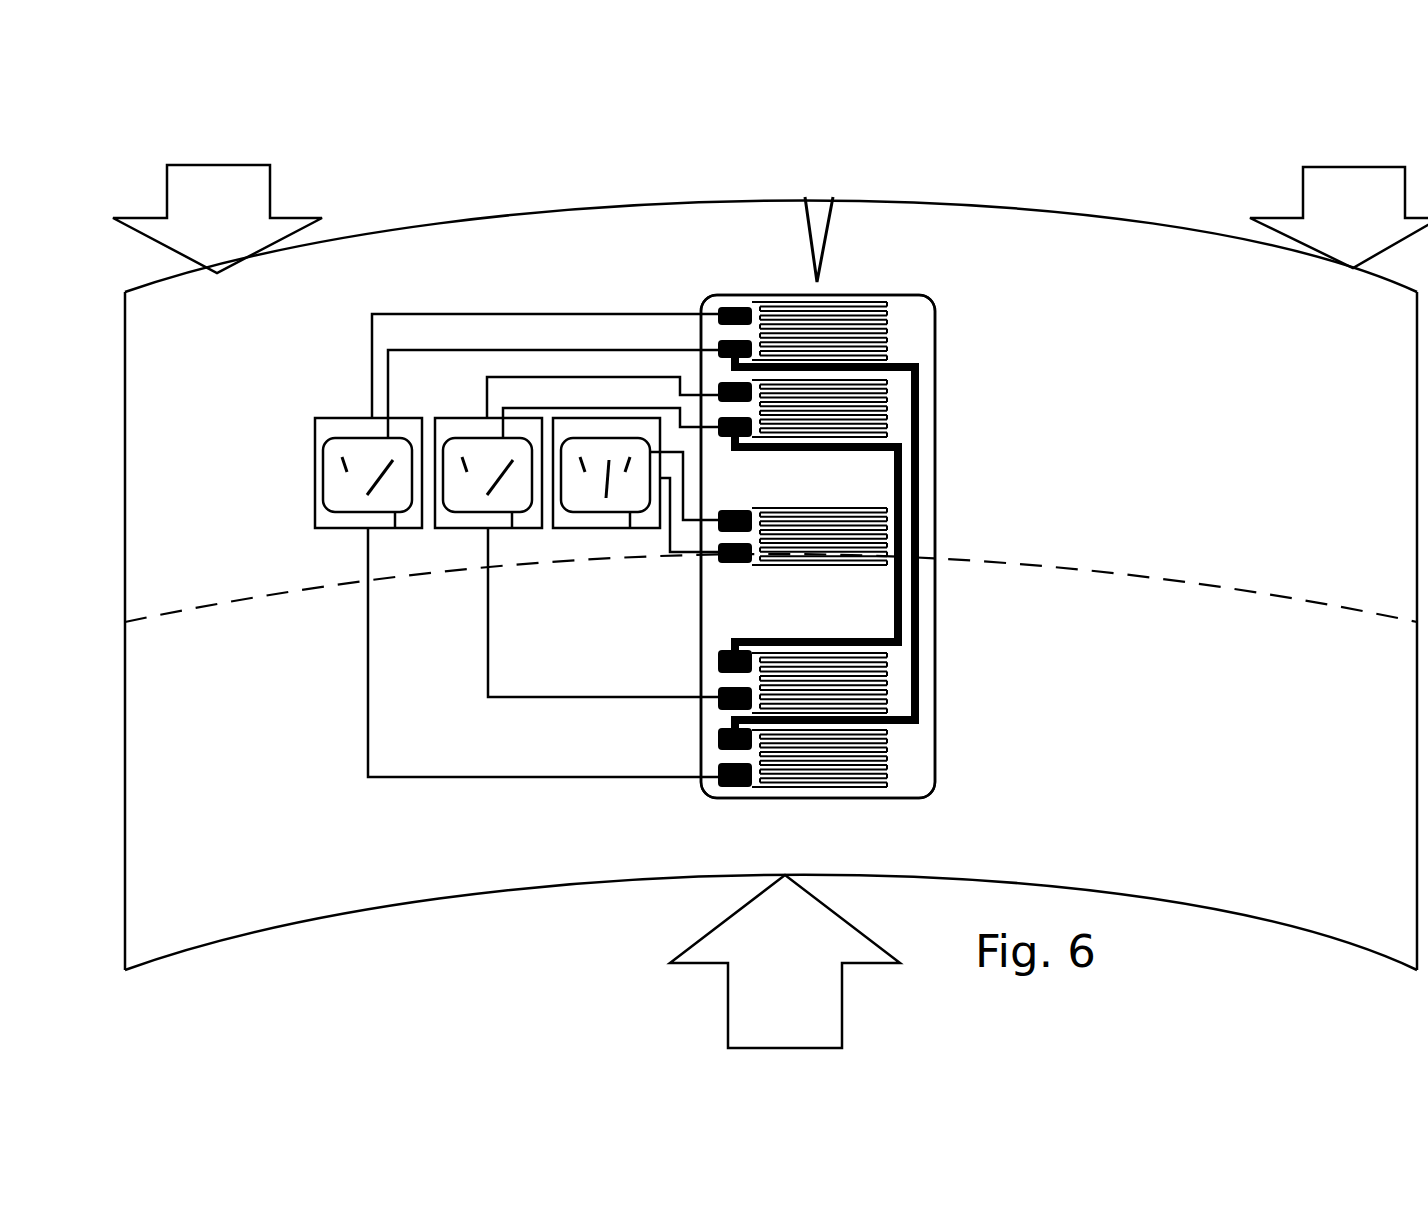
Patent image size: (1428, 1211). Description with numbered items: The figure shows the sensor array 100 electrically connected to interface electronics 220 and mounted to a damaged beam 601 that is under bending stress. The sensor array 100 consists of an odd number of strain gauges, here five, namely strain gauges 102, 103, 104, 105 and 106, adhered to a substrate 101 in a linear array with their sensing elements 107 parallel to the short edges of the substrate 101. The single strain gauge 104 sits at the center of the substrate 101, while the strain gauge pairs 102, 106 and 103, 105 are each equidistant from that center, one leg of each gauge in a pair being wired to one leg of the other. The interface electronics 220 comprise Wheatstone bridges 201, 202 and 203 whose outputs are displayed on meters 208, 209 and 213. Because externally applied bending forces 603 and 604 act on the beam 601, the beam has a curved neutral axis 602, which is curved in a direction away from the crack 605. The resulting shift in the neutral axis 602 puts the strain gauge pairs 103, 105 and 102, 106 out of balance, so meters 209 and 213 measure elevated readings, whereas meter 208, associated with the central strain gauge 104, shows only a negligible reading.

The sensor array 100 is at (945, 307).
The substrate 101 is at (935, 493).
The strain gauge 102 is at (887, 308).
The strain gauge 103 is at (887, 383).
The strain gauge 104 is at (890, 515).
The strain gauge 105 is at (888, 657).
The strain gauge 106 is at (887, 733).
The sensing elements 107 is at (873, 572).
The Wheatstone bridge 201 is at (583, 528).
The Wheatstone bridge 202 is at (457, 528).
The Wheatstone bridge 203 is at (340, 528).
The meter 208 is at (630, 528).
The meter 209 is at (512, 528).
The meter 213 is at (395, 528).
The interface electronics 220 is at (530, 306).
The beam 601 is at (567, 893).
The neutral axis 602 is at (1235, 588).
The bending force 603 is at (785, 961).
The bending force 604 is at (770, 219).
The crack 605 is at (810, 197).